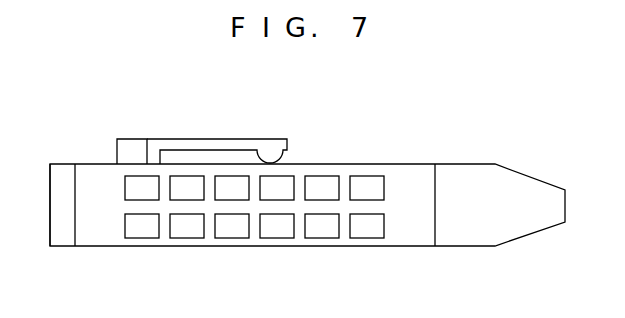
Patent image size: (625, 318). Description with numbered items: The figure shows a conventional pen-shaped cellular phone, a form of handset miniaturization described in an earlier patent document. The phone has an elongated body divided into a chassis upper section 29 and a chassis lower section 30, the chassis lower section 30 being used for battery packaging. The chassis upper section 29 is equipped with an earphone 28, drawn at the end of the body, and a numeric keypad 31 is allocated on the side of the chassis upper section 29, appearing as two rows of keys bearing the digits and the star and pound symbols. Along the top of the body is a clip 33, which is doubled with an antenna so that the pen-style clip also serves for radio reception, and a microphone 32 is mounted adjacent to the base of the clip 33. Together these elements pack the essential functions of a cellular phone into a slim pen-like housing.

The earphone 28 is at (62, 247).
The chassis upper section 29 is at (233, 247).
The chassis lower section 30 is at (465, 164).
The numeric keypad 31 is at (400, 230).
The microphone 32 is at (128, 139).
The clip 33 is at (255, 139).